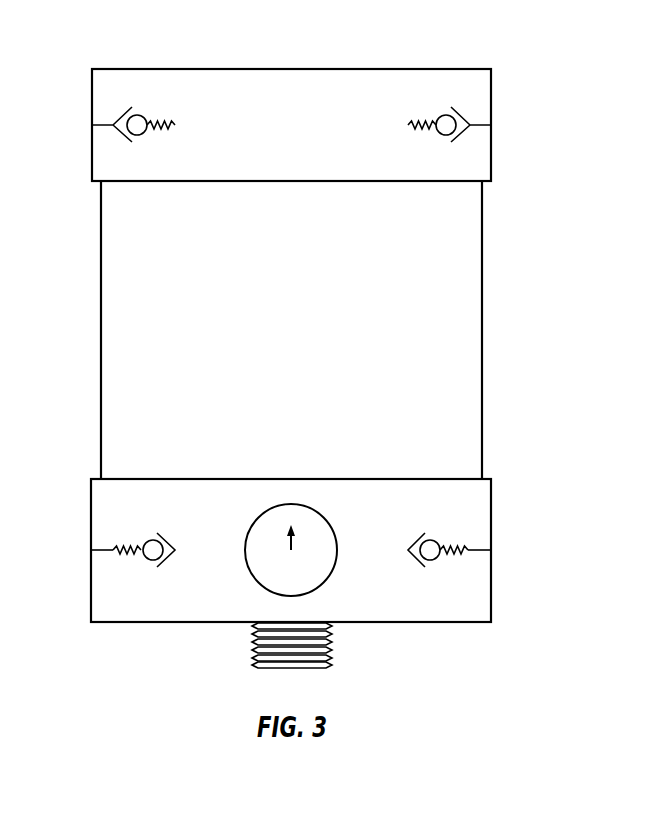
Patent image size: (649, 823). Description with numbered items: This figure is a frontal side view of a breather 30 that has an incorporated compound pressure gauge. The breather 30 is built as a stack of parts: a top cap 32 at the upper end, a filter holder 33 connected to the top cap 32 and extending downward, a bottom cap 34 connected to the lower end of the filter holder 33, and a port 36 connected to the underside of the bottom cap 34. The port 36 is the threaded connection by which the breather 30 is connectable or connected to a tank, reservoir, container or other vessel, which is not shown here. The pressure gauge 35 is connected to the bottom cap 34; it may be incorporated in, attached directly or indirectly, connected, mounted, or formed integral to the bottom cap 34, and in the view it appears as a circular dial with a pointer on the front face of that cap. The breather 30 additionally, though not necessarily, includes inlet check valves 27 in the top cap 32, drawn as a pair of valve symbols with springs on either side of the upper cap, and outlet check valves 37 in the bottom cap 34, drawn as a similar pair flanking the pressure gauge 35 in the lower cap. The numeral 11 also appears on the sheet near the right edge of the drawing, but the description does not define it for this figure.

The breather 30 is at (530, 40).
The top cap 32 is at (491, 133).
The filter holder 33 is at (482, 330).
The bottom cap 34 is at (491, 513).
The inlet check valves 27 is at (141, 114).
The outlet check valves 37 is at (128, 545).
The pressure gauge 35 is at (252, 565).
The port 36 is at (332, 648).
The system 11 is at (636, 406).